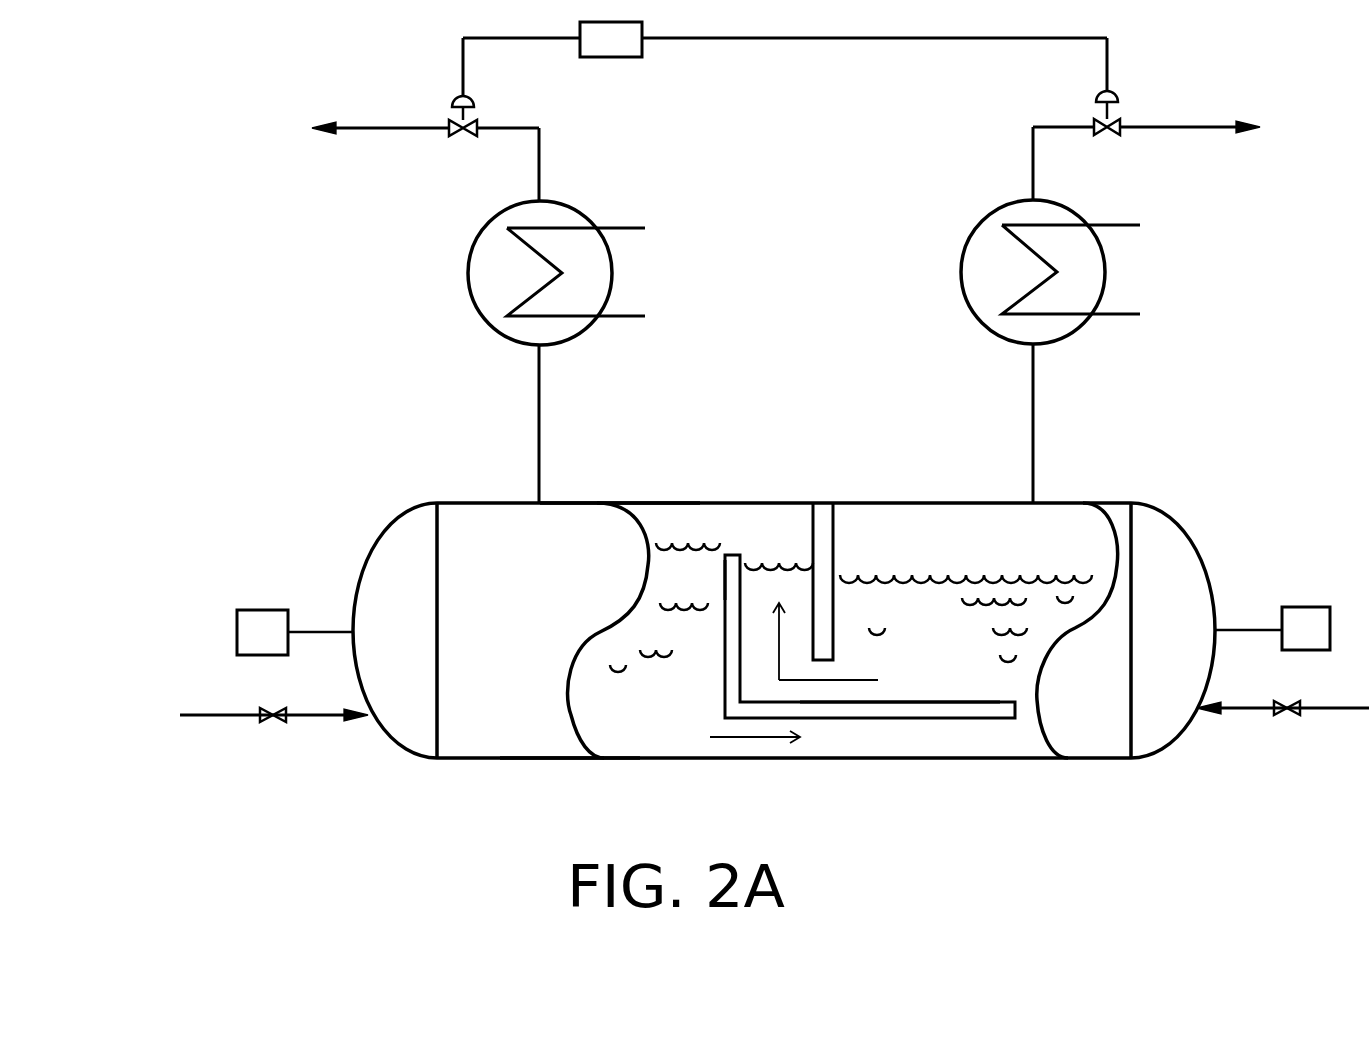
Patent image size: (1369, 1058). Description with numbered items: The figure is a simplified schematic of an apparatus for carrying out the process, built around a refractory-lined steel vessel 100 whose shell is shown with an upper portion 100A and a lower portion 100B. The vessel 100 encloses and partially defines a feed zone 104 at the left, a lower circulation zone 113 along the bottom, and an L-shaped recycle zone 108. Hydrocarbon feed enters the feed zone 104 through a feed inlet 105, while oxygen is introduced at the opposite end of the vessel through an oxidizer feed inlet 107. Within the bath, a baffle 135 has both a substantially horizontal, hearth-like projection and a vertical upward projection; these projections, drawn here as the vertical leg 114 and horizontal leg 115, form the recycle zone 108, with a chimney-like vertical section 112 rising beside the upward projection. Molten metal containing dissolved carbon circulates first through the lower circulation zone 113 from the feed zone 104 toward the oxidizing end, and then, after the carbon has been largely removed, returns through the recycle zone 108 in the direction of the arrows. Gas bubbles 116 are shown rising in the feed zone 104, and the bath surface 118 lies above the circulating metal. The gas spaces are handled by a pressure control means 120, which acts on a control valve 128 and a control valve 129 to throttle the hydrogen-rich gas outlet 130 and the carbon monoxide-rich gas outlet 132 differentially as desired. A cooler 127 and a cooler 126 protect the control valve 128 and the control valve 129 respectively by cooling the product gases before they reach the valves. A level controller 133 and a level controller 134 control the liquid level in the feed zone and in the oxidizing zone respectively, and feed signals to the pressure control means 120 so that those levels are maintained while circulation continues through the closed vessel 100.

The refractory-lined steel vessel 100 is at (784, 651).
The upper vessel shell 100A is at (577, 503).
The lower vessel shell 100B is at (560, 759).
The feed zone 104 is at (656, 687).
The feed inlet 105 is at (232, 713).
The oxidizer feed inlet 107 is at (1283, 708).
The recycle zone 108 is at (803, 560).
The downcomer tube 112 is at (824, 508).
The lower circulation zone 113 is at (705, 733).
The L-shaped conduit 114 is at (725, 630).
The conduit leg 115 is at (908, 701).
The gas bubbles 116 is at (674, 519).
The bath surface 118 is at (922, 574).
The pressure control means 120 is at (785, 59).
The cooler 126 is at (990, 270).
The cooler 127 is at (493, 272).
The control valve 128 is at (474, 97).
The control valve 129 is at (1098, 95).
The hydrogen-rich gas outlet 130 is at (417, 128).
The carbon monoxide-rich gas outlet 132 is at (1146, 124).
The level controller 133 is at (263, 610).
The level controller 134 is at (1305, 607).
The baffle 135 is at (725, 578).